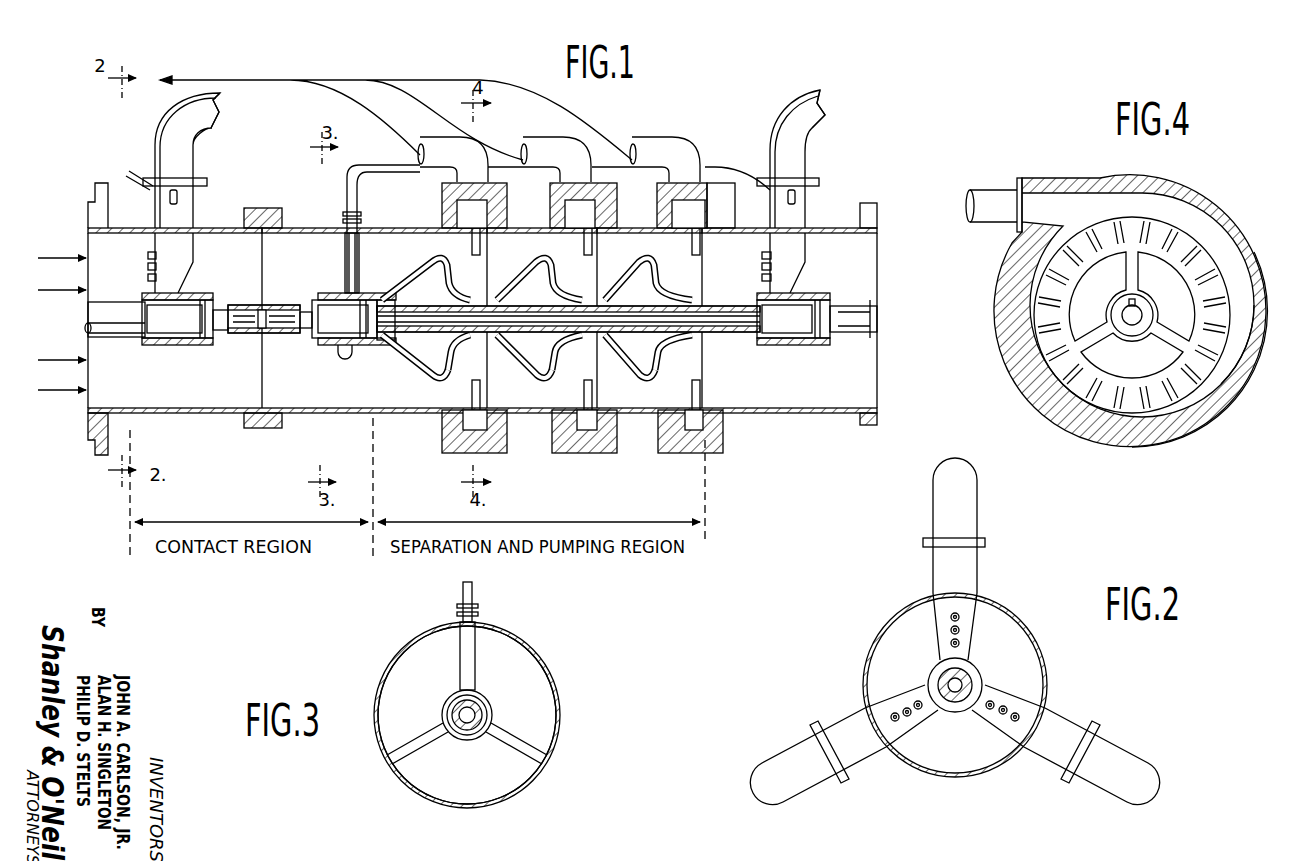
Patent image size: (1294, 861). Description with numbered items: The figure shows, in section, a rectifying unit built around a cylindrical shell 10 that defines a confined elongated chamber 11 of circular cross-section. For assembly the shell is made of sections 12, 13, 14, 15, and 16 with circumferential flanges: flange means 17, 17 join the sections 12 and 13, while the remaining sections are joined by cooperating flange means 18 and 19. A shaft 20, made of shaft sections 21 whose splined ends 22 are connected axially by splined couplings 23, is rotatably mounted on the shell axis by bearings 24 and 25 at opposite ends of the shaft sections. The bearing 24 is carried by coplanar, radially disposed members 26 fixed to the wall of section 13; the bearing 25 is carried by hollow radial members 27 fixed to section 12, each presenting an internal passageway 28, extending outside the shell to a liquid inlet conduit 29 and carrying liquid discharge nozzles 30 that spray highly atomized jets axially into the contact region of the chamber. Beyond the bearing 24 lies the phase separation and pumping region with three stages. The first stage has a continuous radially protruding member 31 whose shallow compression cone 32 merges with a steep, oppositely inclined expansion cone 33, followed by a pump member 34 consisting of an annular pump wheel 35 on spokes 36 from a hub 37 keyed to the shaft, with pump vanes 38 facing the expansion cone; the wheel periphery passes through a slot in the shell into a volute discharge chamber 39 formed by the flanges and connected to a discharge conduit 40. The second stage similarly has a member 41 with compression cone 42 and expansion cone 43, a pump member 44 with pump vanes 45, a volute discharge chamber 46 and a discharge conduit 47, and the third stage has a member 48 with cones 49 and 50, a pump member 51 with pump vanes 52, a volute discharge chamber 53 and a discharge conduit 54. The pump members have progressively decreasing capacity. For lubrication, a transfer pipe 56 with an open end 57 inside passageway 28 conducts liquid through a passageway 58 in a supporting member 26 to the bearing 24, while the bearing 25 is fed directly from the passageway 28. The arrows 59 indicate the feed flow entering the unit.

In FIG. 1, the cylindrical shell 10 is at (302, 226).
In FIG. 4, the cylindrical shell 10 is at (1133, 333).
In FIG. 1, the chamber 11 is at (162, 381).
In FIG. 3, the chamber 11 is at (422, 689).
In FIG. 1, the shell section 12 is at (190, 413).
In FIG. 2, the shell section 12 is at (1046, 656).
In FIG. 1, the shell section 13 is at (338, 413).
In FIG. 3, the shell section 13 is at (552, 676).
In FIG. 1, the shell section 14 is at (524, 413).
In FIG. 1, the shell section 15 is at (636, 413).
In FIG. 1, the shell section 16 is at (790, 413).
In FIG. 1, the flange means 17 is at (250, 430).
In FIG. 1, the flange means 18 is at (442, 434).
In FIG. 4, the flange means 18 is at (1212, 425).
In FIG. 1, the flange means 19 is at (88, 435).
In FIG. 4, the flange means 19 is at (1262, 352).
In FIG. 1, the shaft 20 is at (405, 335).
In FIG. 2, the shaft 20 is at (944, 678).
In FIG. 3, the shaft 20 is at (470, 735).
In FIG. 1, the shaft section 21 is at (110, 310).
In FIG. 1, the splined end 22 is at (238, 334).
In FIG. 1, the splined coupling 23 is at (238, 304).
In FIG. 1, the bearing 24 is at (320, 298).
In FIG. 3, the bearing 24 is at (492, 700).
In FIG. 1, the bearing 25 is at (192, 298).
In FIG. 2, the bearing 25 is at (978, 672).
In FIG. 1, the bearing supporting member 26 is at (358, 247).
In FIG. 3, the bearing supporting member 26 is at (487, 632).
In FIG. 1, the bearing supporting member 27 is at (158, 247).
In FIG. 2, the bearing supporting member 27 is at (978, 583).
In FIG. 1, the internal passageway 28 is at (180, 226).
In FIG. 1, the liquid inlet conduit 29 is at (156, 124).
In FIG. 2, the liquid inlet conduit 29 is at (978, 522).
In FIG. 1, the liquid discharge nozzle 30 is at (150, 263).
In FIG. 2, the liquid discharge nozzle 30 is at (948, 645).
In FIG. 1, the radially protruding member 31 is at (412, 270).
In FIG. 1, the compression cone 32 is at (432, 370).
In FIG. 1, the expansion cone 33 is at (452, 375).
In FIG. 1, the pump member 34 is at (478, 284).
In FIG. 4, the pump member 34 is at (1213, 240).
In FIG. 4, the annular pump wheel 35 is at (1262, 298).
In FIG. 4, the spoke 36 is at (1092, 315).
In FIG. 4, the hub 37 is at (1149, 306).
In FIG. 1, the pump vane 38 is at (470, 247).
In FIG. 4, the pump vane 38 is at (1035, 300).
In FIG. 1, the volute discharge chamber 39 is at (456, 213).
In FIG. 4, the volute discharge chamber 39 is at (1240, 380).
In FIG. 1, the discharge conduit 40 is at (432, 146).
In FIG. 4, the discharge conduit 40 is at (1000, 190).
In FIG. 1, the radially protruding member 41 is at (518, 270).
In FIG. 1, the compression cone 42 is at (525, 370).
In FIG. 1, the expansion cone 43 is at (560, 375).
In FIG. 1, the pump member 44 is at (588, 284).
In FIG. 1, the pump vane 45 is at (582, 247).
In FIG. 1, the volute discharge chamber 46 is at (566, 210).
In FIG. 1, the discharge conduit 47 is at (546, 146).
In FIG. 1, the radially protruding member 48 is at (628, 270).
In FIG. 1, the compression cone 49 is at (632, 366).
In FIG. 1, the expansion cone 50 is at (250, 80).
In FIG. 1, the pump member 51 is at (692, 290).
In FIG. 1, the pump vane 52 is at (689, 247).
In FIG. 1, the volute discharge chamber 53 is at (672, 212).
In FIG. 1, the discharge conduit 54 is at (656, 146).
In FIG. 1, the transfer pipe 56 is at (357, 202).
In FIG. 3, the transfer pipe 56 is at (462, 598).
In FIG. 1, the open end 57 is at (812, 184).
In FIG. 1, the passageway 58 is at (345, 247).
In FIG. 1, the feed streams 59 is at (62, 290).